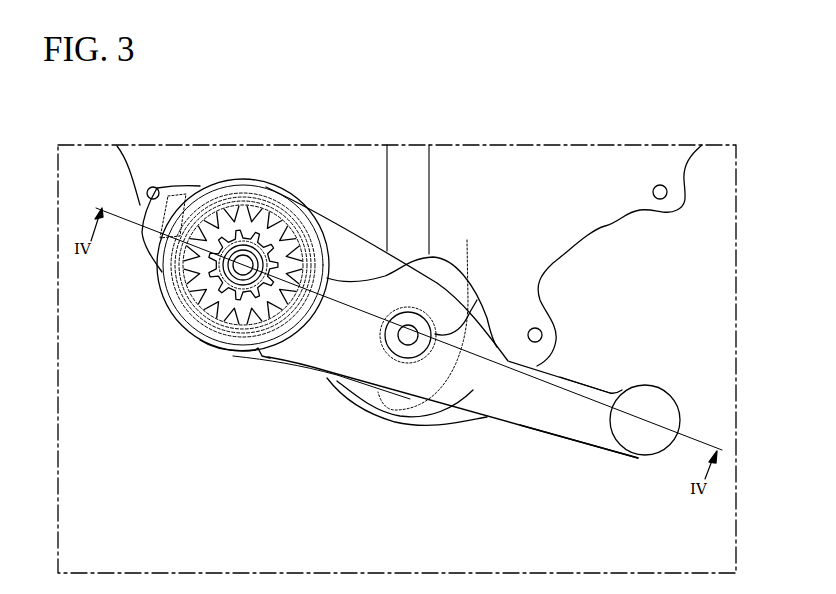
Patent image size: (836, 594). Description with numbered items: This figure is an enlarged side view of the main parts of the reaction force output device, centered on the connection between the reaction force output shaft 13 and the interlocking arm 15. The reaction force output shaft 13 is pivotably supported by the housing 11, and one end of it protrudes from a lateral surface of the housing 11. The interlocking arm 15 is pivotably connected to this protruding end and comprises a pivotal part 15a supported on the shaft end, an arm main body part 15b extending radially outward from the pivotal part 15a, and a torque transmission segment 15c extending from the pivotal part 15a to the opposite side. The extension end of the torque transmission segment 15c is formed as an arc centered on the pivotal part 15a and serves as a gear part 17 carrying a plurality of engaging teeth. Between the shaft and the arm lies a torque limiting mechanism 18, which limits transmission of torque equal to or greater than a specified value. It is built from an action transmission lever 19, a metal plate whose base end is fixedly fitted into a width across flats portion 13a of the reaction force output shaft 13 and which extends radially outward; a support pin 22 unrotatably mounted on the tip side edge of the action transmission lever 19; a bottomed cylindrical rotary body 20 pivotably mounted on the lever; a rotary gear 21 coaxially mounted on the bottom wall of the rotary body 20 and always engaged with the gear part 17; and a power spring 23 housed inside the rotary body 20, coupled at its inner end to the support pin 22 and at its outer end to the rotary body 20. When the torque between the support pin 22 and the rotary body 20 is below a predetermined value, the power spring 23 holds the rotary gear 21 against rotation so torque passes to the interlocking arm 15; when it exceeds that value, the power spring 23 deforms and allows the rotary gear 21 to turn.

The housing 11 is at (589, 220).
The reaction force output shaft 13 is at (410, 343).
The width across flats portion 13a is at (445, 338).
The interlocking arm 15 is at (492, 423).
The pivotal part 15a is at (393, 376).
The arm main body part 15b is at (582, 446).
The torque transmission segment 15c is at (312, 353).
The gear part 17 is at (266, 360).
The torque limiting mechanism 18 is at (194, 351).
The action transmission lever 19 is at (363, 253).
The rotary body 20 is at (213, 190).
The rotary gear 21 is at (214, 283).
The support pin 22 is at (250, 250).
The power spring 23 is at (286, 230).